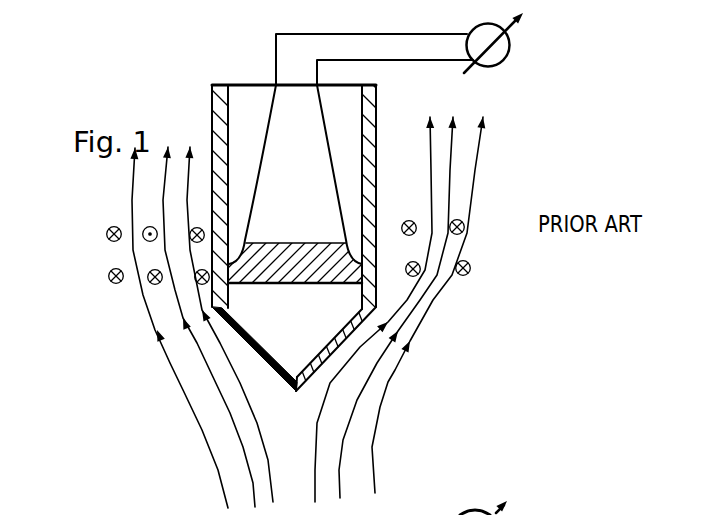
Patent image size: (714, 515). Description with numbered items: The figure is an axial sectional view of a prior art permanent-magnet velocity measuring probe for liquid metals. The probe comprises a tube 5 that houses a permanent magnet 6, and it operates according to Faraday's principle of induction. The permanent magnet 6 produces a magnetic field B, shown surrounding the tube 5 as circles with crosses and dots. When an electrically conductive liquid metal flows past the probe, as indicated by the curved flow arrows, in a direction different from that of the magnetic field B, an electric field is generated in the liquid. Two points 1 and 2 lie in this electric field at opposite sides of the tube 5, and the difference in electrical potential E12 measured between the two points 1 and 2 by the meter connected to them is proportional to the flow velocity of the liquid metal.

The point 1 is at (229, 264).
The point 2 is at (362, 262).
The tube 5 is at (212, 108).
The permanent magnet 6 is at (323, 278).
The magnetic field B is at (104, 235).
The difference in electrical potential E12 is at (420, 49).